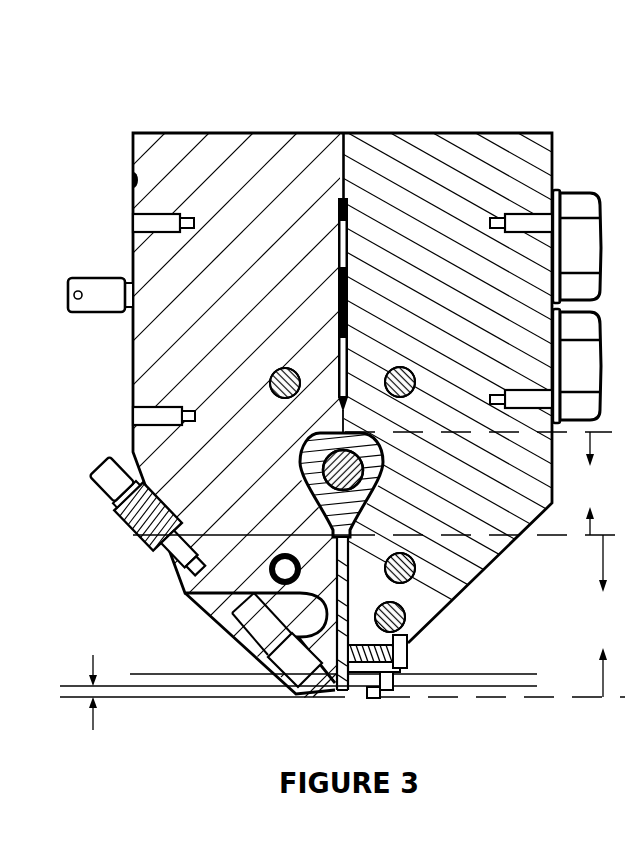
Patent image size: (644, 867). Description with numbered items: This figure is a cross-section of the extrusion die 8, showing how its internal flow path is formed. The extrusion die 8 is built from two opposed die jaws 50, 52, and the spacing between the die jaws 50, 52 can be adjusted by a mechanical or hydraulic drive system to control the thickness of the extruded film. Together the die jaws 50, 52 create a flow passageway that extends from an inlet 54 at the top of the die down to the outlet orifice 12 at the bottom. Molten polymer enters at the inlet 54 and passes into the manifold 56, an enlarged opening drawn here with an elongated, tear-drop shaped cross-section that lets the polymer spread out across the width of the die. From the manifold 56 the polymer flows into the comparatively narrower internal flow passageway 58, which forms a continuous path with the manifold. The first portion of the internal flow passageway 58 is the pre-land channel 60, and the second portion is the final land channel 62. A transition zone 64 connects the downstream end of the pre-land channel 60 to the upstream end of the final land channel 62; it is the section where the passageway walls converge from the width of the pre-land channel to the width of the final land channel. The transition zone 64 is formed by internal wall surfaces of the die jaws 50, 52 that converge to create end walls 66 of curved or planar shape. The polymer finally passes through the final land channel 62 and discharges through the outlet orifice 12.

The extrusion die 8 is at (526, 72).
The outlet orifice 12 is at (343, 690).
The die jaw 50 is at (277, 177).
The die jaw 52 is at (423, 153).
The inlet 54 is at (339, 118).
The manifold 56 is at (590, 483).
The internal flow passageway 58 is at (603, 616).
The pre-land channel 60 is at (152, 674).
The final land channel 62 is at (69, 696).
The transition zone 64 is at (512, 702).
The end walls 66 is at (343, 690).